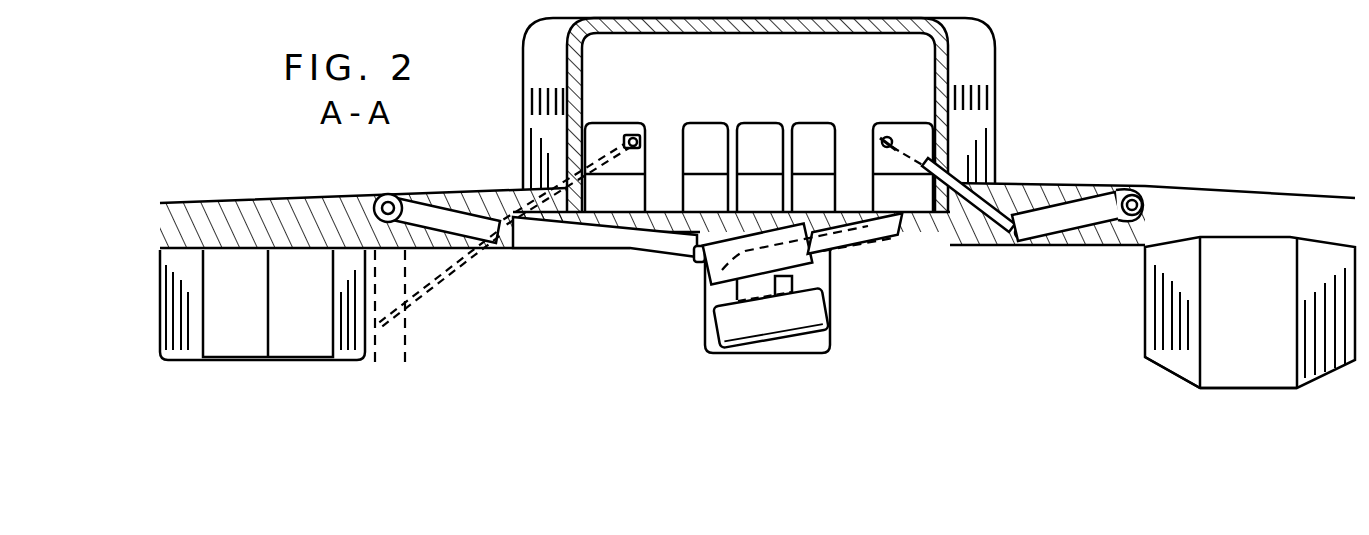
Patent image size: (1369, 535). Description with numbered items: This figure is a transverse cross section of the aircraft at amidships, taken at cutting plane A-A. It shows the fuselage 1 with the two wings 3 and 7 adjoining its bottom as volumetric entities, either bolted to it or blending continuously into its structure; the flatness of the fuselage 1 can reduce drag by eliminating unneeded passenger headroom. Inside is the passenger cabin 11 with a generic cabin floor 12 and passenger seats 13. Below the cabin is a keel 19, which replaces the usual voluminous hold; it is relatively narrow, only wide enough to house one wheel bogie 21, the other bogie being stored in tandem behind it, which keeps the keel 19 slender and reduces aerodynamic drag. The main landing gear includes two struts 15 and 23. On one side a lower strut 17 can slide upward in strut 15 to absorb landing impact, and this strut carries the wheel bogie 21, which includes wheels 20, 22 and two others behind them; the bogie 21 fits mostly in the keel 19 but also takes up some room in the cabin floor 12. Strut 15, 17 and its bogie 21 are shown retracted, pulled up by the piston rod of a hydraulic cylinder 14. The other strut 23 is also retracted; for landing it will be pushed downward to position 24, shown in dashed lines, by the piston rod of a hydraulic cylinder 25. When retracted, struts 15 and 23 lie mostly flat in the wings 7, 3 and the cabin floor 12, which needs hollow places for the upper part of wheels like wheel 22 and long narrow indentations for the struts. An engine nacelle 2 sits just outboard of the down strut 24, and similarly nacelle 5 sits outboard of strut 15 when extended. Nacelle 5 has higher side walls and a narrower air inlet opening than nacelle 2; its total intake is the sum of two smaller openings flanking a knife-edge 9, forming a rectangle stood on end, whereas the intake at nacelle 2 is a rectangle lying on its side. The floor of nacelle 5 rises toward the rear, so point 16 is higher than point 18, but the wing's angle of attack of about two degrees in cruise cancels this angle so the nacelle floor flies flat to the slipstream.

The fuselage 1 is at (540, 20).
The engine nacelle 2 is at (204, 280).
The wing 3 is at (285, 197).
The nacelle 5 is at (1204, 301).
The wing 7 is at (1208, 190).
The knife-edge 9 is at (1254, 309).
The passenger cabin 11 is at (681, 103).
The cabin floor 12 is at (705, 202).
The passenger seats 13 is at (815, 123).
The hydraulic cylinder 14 is at (917, 150).
The strut 15 is at (1043, 202).
The point 16 is at (1148, 358).
The lower strut 17 is at (818, 277).
The point 18 is at (1200, 390).
The keel 19 is at (830, 338).
The wheel 20 is at (720, 330).
The wheel bogie 21 is at (712, 300).
The wheel 22 is at (699, 258).
The strut 23 is at (580, 253).
The down strut position 24 is at (406, 333).
The hydraulic cylinder 25 is at (530, 192).